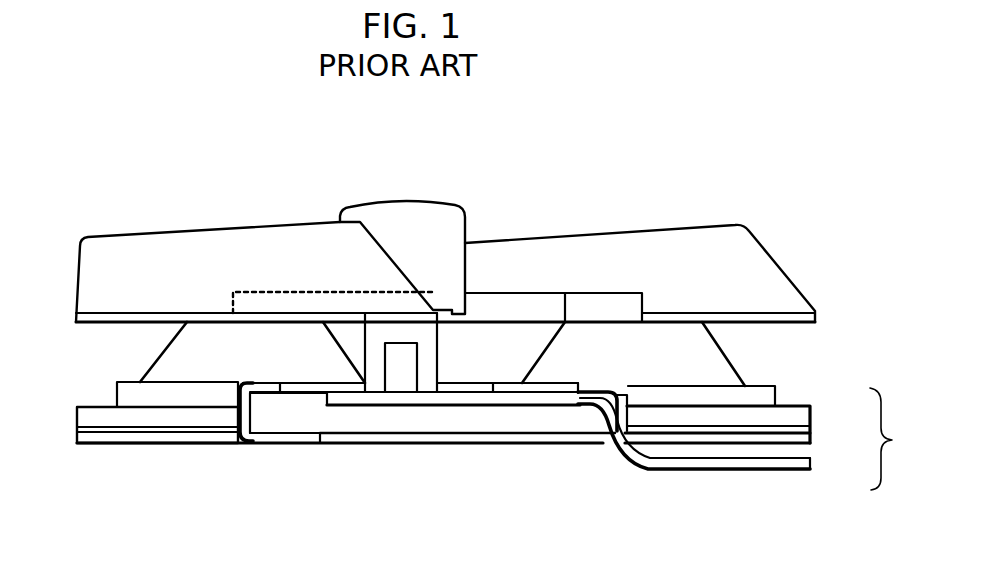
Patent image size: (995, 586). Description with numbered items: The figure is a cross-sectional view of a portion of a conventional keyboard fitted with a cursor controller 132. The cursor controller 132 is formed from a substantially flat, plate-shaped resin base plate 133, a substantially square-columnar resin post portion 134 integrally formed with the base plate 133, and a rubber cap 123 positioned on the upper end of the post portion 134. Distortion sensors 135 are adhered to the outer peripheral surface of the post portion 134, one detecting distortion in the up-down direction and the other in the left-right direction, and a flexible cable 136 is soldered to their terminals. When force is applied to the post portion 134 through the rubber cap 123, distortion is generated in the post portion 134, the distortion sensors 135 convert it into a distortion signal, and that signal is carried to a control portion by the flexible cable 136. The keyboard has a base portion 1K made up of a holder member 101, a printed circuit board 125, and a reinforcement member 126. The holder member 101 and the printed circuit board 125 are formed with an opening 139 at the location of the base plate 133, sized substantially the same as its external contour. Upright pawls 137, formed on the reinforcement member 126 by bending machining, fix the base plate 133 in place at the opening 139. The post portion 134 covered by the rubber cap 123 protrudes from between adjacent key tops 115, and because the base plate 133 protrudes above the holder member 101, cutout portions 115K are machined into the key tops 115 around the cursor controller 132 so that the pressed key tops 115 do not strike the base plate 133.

The base portion 1K is at (897, 439).
The holder member 101 is at (812, 410).
The key tops 115 is at (167, 250).
The cutout portions 115K is at (252, 297).
The rubber cap 123 is at (402, 214).
The printed circuit board 125 is at (812, 430).
The reinforcement member 126 is at (812, 438).
The cursor controller 132 is at (447, 384).
The base plate 133 is at (300, 422).
The post portion 134 is at (426, 386).
The distortion sensors 135 is at (400, 386).
The flexible cable 136 is at (680, 460).
The upright pawls 137 is at (263, 390).
The opening 139 is at (238, 406).